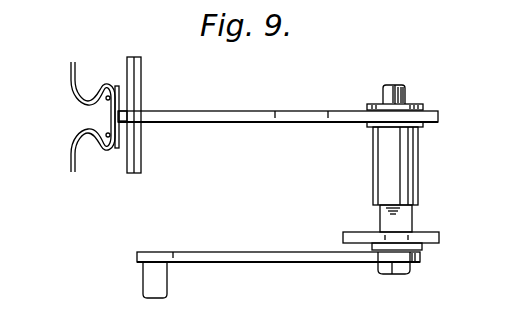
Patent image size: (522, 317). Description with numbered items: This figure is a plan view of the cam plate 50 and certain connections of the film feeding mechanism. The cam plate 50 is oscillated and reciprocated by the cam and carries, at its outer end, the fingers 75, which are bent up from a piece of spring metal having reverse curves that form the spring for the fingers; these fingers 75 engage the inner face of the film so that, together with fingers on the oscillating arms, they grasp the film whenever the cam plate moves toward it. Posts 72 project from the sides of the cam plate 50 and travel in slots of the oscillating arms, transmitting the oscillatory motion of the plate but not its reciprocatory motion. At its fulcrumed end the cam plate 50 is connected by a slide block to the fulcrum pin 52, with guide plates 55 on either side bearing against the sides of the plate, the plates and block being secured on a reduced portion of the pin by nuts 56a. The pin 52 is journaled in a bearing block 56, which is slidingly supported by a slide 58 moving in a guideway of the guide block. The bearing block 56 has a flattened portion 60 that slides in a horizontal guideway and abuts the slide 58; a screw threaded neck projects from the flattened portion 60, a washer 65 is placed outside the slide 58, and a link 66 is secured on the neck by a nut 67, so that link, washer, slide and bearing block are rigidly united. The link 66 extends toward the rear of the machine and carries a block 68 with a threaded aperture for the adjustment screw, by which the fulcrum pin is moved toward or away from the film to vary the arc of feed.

The cam plate 50 is at (244, 124).
The fulcrum pin 52 is at (399, 83).
The guide plates 55 is at (423, 105).
The bearing block 56 is at (402, 160).
The nuts 56a is at (406, 92).
The slide 58 is at (439, 238).
The flattened portion 60 is at (400, 218).
The washer 65 is at (420, 248).
The link 66 is at (287, 265).
The nut 67 is at (393, 276).
The block 68 is at (165, 285).
The posts 72 is at (141, 155).
The fingers 75 is at (70, 86).